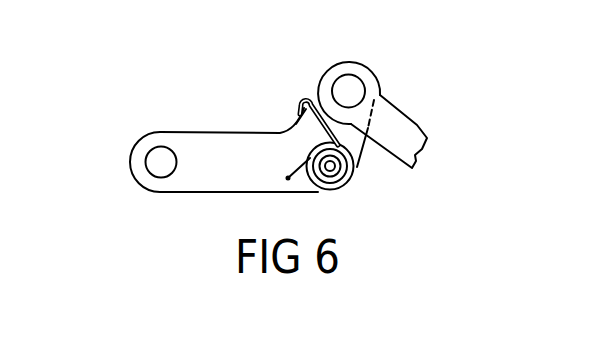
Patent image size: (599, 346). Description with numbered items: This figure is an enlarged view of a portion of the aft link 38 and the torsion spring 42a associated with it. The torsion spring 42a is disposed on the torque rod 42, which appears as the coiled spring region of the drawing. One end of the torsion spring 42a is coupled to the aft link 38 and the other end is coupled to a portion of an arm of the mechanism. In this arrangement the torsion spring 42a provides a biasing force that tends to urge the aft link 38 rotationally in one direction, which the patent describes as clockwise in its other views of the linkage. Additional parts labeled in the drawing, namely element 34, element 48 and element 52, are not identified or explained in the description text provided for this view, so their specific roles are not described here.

The pivot hole 34 is at (158, 158).
The aft link 38 is at (194, 116).
The torque rod 42 is at (326, 126).
The torsion spring 42a is at (296, 135).
The lever 48 is at (416, 101).
The lever arm portion 52 is at (432, 113).